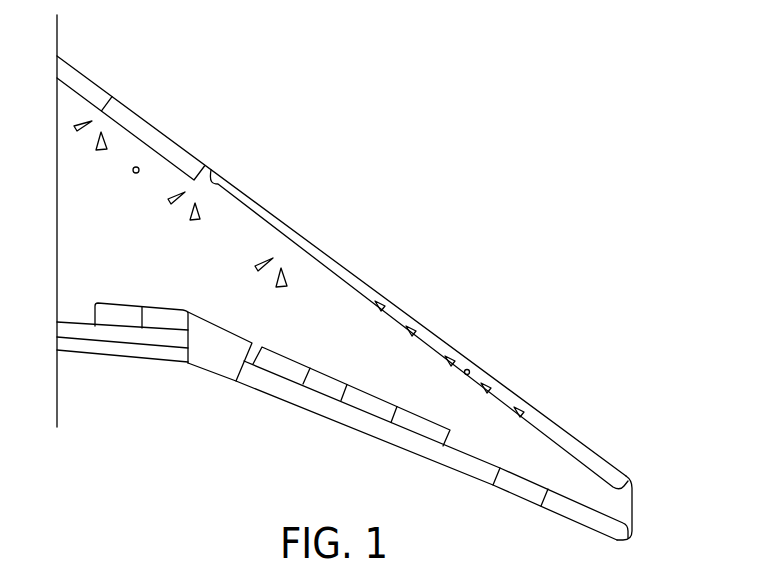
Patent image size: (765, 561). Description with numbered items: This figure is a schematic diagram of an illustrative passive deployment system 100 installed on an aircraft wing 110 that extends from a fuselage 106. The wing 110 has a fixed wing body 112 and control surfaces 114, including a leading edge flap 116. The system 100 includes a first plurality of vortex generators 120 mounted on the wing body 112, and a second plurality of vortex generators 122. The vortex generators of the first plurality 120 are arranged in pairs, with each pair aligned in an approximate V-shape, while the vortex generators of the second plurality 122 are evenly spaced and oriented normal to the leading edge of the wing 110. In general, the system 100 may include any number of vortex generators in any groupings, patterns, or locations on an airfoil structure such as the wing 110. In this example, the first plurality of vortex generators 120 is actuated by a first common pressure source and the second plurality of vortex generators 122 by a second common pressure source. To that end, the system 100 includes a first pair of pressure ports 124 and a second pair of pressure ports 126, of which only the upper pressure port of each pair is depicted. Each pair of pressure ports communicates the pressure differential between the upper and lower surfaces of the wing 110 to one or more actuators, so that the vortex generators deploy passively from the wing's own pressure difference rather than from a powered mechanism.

The passive deployment system 100 is at (440, 129).
The fuselage 106 is at (44, 37).
The aircraft wing 110 is at (618, 414).
The fixed wing body 112 is at (290, 346).
The control surfaces 114 is at (141, 126).
The leading edge flap 116 is at (342, 273).
The first plurality of vortex generators 120 is at (200, 209).
The second plurality of vortex generators 122 is at (421, 329).
The first pair of pressure ports 124 is at (139, 169).
The second pair of pressure ports 126 is at (470, 371).